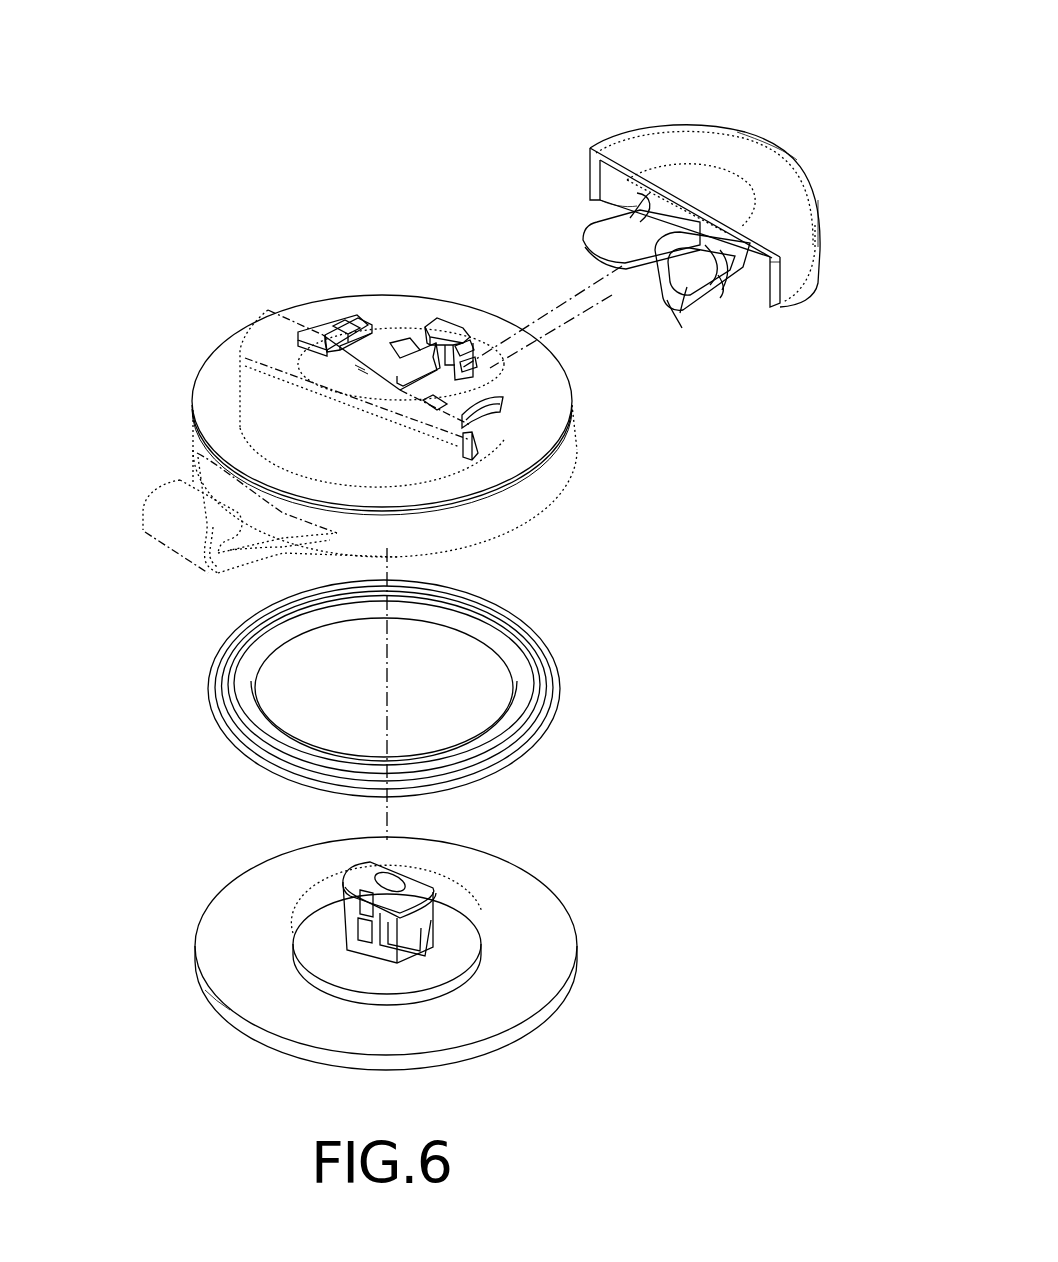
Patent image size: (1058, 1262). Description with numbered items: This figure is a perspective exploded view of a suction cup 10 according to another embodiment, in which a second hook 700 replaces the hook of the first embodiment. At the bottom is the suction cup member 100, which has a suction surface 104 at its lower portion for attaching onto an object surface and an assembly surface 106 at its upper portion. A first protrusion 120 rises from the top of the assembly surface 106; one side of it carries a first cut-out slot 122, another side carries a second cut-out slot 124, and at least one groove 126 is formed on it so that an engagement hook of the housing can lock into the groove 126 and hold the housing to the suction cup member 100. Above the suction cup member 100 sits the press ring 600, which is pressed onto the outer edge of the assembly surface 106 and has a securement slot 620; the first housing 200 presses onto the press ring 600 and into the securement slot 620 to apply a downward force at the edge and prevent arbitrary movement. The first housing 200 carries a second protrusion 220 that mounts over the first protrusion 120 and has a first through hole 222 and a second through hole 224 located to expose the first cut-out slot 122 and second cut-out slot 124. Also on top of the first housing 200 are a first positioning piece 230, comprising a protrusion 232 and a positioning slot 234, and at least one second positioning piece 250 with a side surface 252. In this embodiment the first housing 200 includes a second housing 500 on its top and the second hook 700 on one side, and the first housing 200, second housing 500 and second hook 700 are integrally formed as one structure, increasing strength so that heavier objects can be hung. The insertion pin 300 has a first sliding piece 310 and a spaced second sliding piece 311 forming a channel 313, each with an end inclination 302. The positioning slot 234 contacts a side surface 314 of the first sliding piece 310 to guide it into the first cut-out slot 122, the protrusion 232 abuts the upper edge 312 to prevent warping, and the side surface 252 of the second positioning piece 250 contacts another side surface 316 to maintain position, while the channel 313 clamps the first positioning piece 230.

The suction cup 10 is at (668, 38).
The suction cup member 100 is at (552, 958).
The suction surface 104 is at (230, 1010).
The assembly surface 106 is at (223, 927).
The first protrusion 120 is at (422, 872).
The first cut-out slot 122 is at (440, 905).
The second cut-out slot 124 is at (350, 893).
The groove 126 is at (355, 927).
The first housing 200 is at (563, 450).
The second protrusion 220 is at (420, 322).
The first through hole 222 is at (497, 400).
The second through hole 224 is at (383, 312).
The first positioning piece 230 is at (462, 330).
The protrusion 232 is at (470, 350).
The positioning slot 234 is at (478, 362).
The second positioning piece 250 is at (322, 321).
The side surface 252 is at (340, 322).
The insertion pin 300 is at (703, 144).
The inclination 302 is at (583, 235).
The first sliding piece 310 is at (597, 198).
The second sliding piece 311 is at (820, 222).
The upper edge 312 is at (720, 300).
The channel 313 is at (790, 160).
The side surface 314 is at (700, 295).
The side surface 316 is at (760, 300).
The second housing 500 is at (276, 376).
The press ring 600 is at (552, 675).
The securement slot 620 is at (540, 688).
The second hook 700 is at (163, 520).